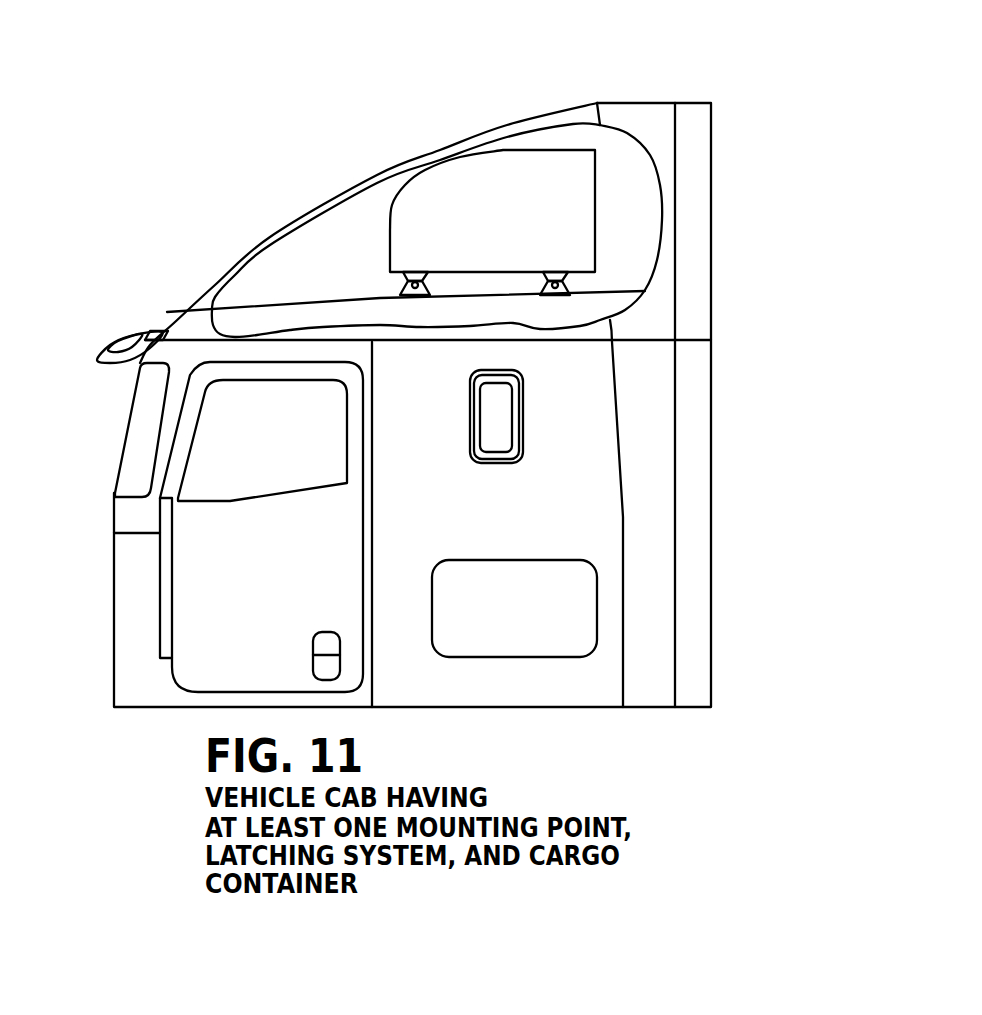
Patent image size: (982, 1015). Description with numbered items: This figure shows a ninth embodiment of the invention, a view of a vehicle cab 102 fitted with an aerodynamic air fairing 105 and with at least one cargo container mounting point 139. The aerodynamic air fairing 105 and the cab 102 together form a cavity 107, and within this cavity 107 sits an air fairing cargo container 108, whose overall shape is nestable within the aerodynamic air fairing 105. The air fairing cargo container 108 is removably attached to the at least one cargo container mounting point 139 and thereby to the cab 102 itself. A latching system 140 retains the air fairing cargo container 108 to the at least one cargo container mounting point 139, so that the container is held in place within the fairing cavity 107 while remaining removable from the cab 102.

The cab 102 is at (109, 522).
The aerodynamic air fairing 105 is at (340, 188).
The cavity 107 is at (267, 290).
The air fairing cargo container 108 is at (538, 176).
The cargo container mounting point 139 is at (395, 284).
The latching system 140 is at (414, 274).